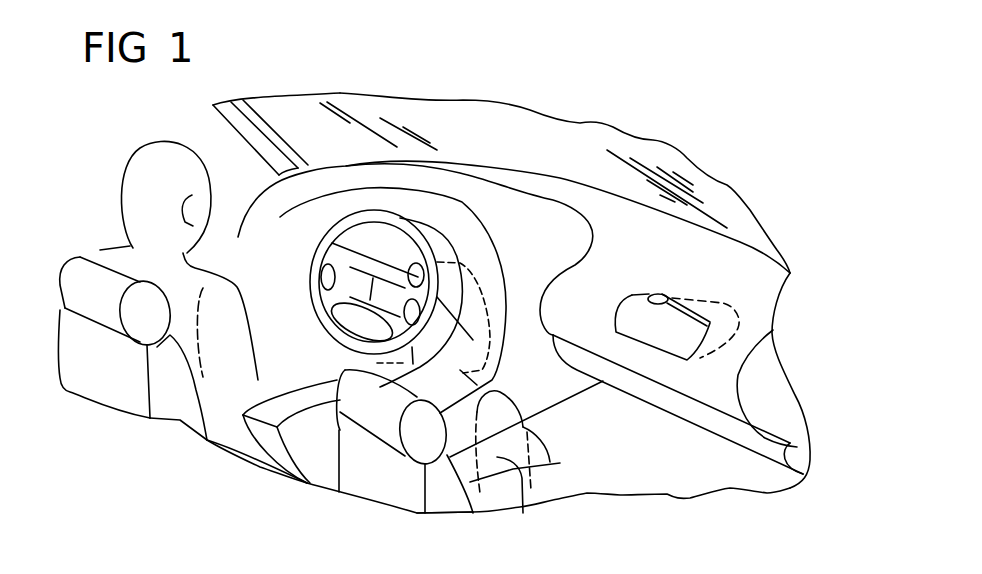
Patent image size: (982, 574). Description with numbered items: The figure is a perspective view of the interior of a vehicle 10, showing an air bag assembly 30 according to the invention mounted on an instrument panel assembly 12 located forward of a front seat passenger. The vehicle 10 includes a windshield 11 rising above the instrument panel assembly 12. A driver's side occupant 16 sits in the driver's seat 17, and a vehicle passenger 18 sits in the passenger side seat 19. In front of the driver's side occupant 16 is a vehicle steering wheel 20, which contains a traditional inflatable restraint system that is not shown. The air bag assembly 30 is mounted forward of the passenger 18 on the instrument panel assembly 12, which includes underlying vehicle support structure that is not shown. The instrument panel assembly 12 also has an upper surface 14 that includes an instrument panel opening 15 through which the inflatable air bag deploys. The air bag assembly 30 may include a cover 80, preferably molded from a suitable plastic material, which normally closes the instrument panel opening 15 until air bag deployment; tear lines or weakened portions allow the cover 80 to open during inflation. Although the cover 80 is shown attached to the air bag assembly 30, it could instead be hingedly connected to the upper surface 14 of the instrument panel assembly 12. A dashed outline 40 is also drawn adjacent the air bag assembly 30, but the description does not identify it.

The vehicle 10 is at (211, 73).
The windshield 11 is at (562, 140).
The instrument panel assembly 12 is at (798, 284).
The upper surface 14 is at (687, 250).
The instrument panel opening 15 is at (668, 300).
The driver's side occupant 16 is at (133, 248).
The driver's seat 17 is at (93, 363).
The vehicle passenger 18 is at (523, 513).
The passenger side seat 19 is at (387, 480).
The vehicle steering wheel 20 is at (348, 220).
The air bag assembly 30 is at (667, 372).
The controller 40 is at (737, 320).
The cover 80 is at (626, 285).